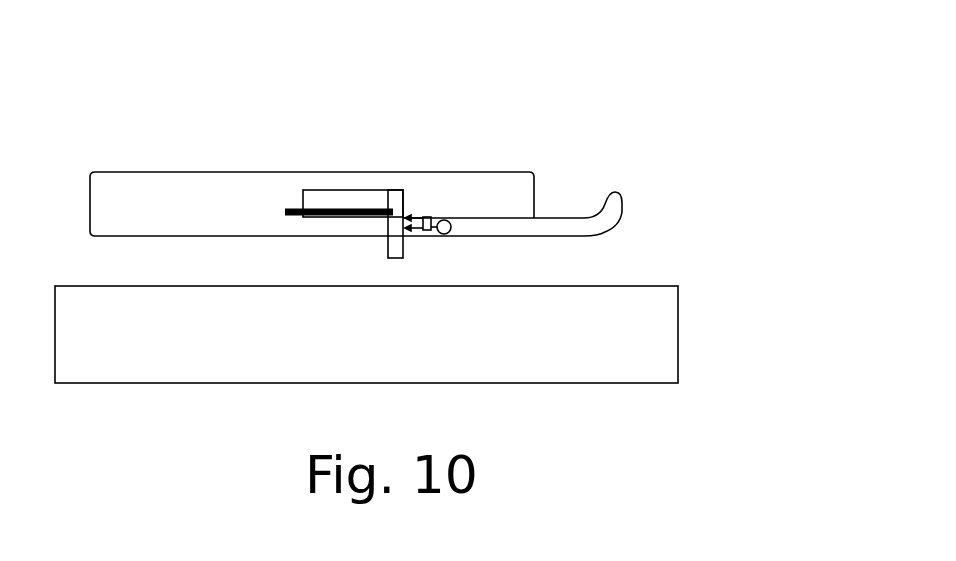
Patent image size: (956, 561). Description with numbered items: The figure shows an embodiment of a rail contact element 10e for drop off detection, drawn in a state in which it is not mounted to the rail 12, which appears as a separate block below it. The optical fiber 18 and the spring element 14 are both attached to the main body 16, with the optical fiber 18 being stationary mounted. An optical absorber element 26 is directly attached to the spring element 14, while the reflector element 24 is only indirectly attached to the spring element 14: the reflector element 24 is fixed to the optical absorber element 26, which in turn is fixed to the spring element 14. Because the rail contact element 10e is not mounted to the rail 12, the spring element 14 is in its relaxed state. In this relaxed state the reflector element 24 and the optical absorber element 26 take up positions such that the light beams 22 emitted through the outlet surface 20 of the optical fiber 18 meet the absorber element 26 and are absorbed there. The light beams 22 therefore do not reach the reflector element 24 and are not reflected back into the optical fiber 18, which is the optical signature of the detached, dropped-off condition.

The rail contact element 10e is at (630, 59).
The rail 12 is at (366, 334).
The spring element 14 is at (293, 207).
The main body 16 is at (312, 204).
The optical fiber 18 is at (614, 206).
The outlet surface 20 is at (446, 220).
The light beams 22 is at (433, 215).
The reflector element 24 is at (395, 244).
The optical absorber element 26 is at (395, 214).